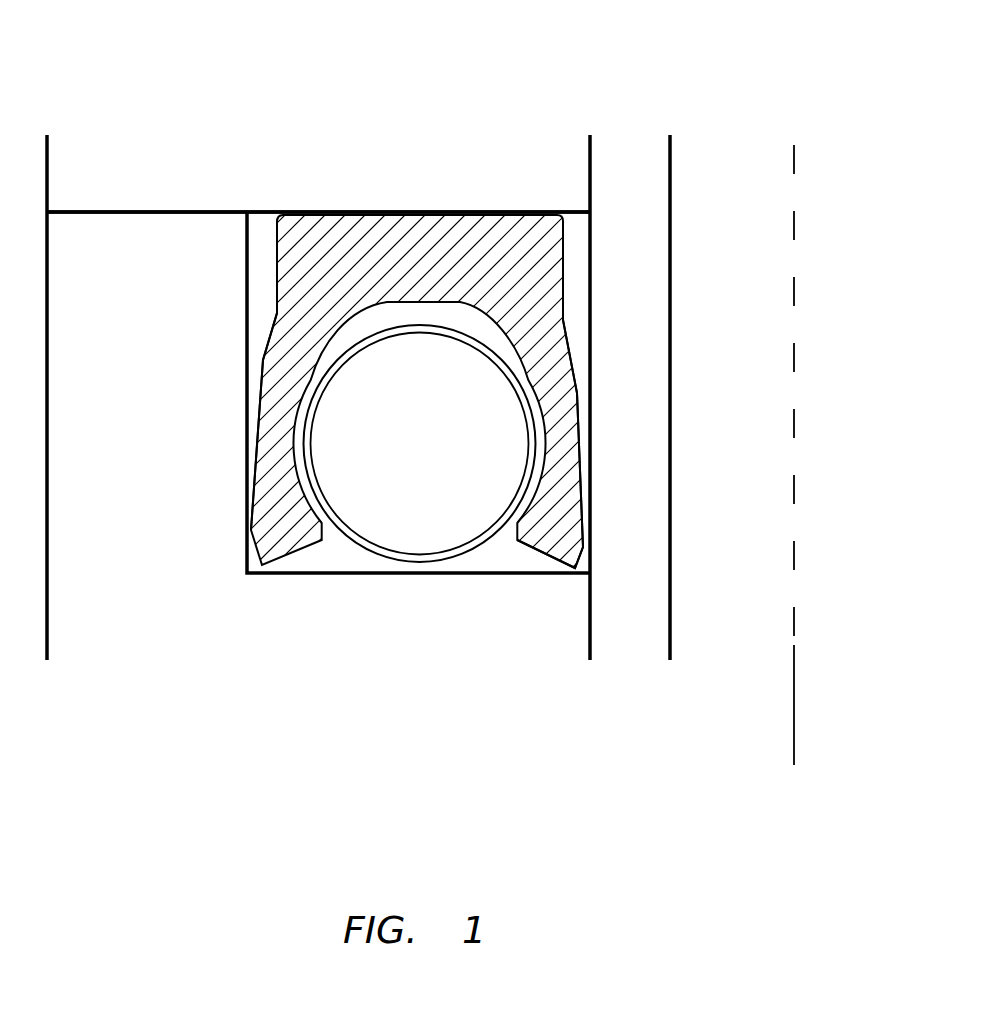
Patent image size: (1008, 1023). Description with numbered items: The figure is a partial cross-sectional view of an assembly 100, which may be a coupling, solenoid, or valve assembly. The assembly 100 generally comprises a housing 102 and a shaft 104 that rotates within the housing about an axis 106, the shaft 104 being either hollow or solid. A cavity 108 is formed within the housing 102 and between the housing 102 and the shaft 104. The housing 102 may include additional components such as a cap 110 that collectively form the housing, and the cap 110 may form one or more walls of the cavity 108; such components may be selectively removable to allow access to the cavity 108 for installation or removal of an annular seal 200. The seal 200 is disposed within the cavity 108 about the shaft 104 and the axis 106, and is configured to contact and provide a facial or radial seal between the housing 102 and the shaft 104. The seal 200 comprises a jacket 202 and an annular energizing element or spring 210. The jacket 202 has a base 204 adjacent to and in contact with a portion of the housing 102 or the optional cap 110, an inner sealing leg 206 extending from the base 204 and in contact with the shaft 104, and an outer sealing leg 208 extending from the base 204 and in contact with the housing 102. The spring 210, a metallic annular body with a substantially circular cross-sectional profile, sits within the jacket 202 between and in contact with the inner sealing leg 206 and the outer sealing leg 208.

The assembly 100 is at (630, 81).
The housing 102 is at (163, 391).
The shaft 104 is at (673, 308).
The axis 106 is at (796, 230).
The cavity 108 is at (327, 563).
The cap 110 is at (297, 171).
The annular seal 200 is at (485, 548).
The jacket 202 is at (553, 566).
The base 204 is at (452, 212).
The inner sealing leg 206 is at (577, 393).
The outer sealing leg 208 is at (264, 356).
The spring 210 is at (414, 560).